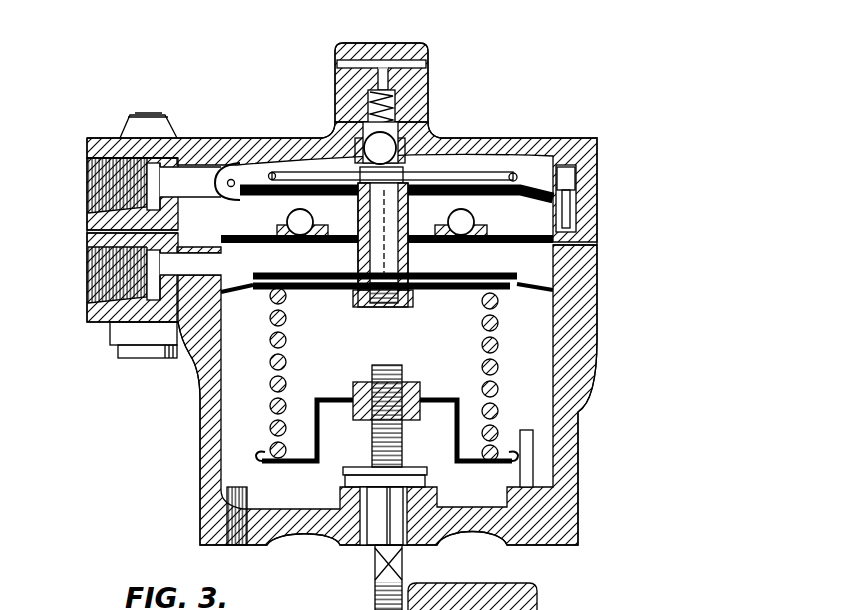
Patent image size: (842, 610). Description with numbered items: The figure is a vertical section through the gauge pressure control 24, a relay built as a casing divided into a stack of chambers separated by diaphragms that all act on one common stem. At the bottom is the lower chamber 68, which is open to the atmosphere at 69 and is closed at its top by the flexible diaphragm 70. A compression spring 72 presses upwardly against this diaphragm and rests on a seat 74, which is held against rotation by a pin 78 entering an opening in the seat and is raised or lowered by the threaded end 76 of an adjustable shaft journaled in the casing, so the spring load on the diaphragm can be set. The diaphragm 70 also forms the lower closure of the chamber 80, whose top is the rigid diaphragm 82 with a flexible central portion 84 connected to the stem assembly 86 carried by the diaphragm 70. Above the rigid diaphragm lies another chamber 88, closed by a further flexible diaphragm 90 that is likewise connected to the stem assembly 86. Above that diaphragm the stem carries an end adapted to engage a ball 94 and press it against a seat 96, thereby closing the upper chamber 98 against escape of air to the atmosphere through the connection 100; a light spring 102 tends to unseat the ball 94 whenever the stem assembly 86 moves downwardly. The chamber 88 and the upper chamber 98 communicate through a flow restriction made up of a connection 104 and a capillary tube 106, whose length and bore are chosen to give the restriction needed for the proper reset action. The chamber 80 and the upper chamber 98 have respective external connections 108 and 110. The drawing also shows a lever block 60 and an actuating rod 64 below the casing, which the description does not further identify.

The gauge pressure control 24 is at (596, 414).
The lever block 60 is at (538, 606).
The actuating rod 64 is at (496, 577).
The lower chamber 68 is at (535, 362).
The atmospheric opening 69 is at (227, 524).
The flexible diaphragm 70 is at (534, 284).
The compression spring 72 is at (272, 362).
The seat 74 is at (328, 397).
The threaded end 76 is at (398, 367).
The pin 78 is at (530, 474).
The chamber 80 is at (530, 257).
The rigid diaphragm 82 is at (510, 240).
The flexible central portion 84 is at (420, 228).
The stem assembly 86 is at (358, 252).
The chamber 88 is at (232, 180).
The flexible diaphragm 90 is at (463, 183).
The ball 94 is at (375, 143).
The seat 96 is at (405, 128).
The upper chamber 98 is at (318, 165).
The connection 100 is at (363, 60).
The light spring 102 is at (420, 116).
The connection 104 is at (565, 213).
The capillary tube 106 is at (513, 175).
The external connection 108 is at (92, 280).
The external connection 110 is at (100, 190).